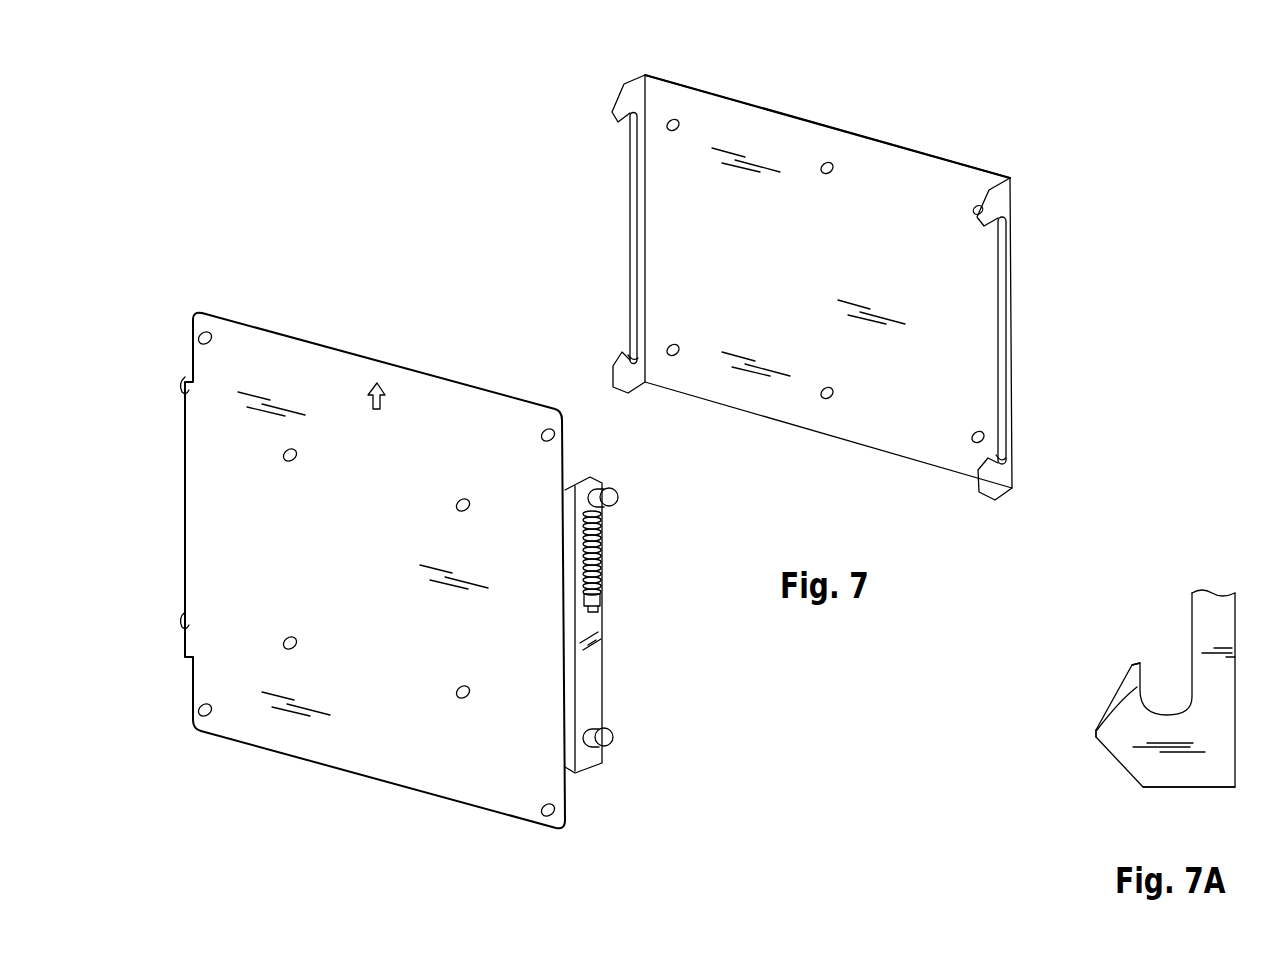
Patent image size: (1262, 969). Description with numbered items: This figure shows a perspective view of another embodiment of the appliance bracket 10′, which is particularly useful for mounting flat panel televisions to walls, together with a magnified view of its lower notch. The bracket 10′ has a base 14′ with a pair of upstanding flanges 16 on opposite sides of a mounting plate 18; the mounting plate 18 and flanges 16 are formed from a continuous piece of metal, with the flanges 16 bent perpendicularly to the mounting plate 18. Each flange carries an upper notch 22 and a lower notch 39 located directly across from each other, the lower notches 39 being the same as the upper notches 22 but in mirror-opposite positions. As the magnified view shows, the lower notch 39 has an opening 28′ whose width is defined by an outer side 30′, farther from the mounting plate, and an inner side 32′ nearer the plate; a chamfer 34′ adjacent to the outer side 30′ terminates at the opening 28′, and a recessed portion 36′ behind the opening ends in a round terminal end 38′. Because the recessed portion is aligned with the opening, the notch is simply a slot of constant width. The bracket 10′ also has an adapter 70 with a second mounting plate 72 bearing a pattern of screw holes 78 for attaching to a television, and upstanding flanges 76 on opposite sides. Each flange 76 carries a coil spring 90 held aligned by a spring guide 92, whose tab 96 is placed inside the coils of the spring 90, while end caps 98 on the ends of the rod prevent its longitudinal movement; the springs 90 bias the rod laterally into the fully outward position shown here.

In FIG. 7, the appliance bracket 10′ is at (353, 168).
In FIG. 7, the adapter 70 is at (215, 293).
In FIG. 7, the second mounting plate 72 is at (315, 372).
In FIG. 7, the screw holes 78 is at (298, 455).
In FIG. 7, the upstanding flanges 76 is at (590, 683).
In FIG. 7, the end caps 98 is at (612, 500).
In FIG. 7, the coil spring 90 is at (600, 557).
In FIG. 7, the spring guide 92 is at (600, 597).
In FIG. 7, the tab 96 is at (602, 602).
In FIG. 7, the base 14′ is at (1012, 315).
In FIG. 7, the upstanding flanges 16 is at (618, 121).
In FIG. 7, the mounting plate 18 is at (815, 264).
In FIG. 7, the upper notch 22 is at (630, 132).
In FIG. 7, the lower notch 39 is at (622, 352).
In FIG. 7A, the opening 28′ is at (1162, 670).
In FIG. 7A, the outer side 30′ is at (1133, 667).
In FIG. 7A, the inner side 32′ is at (1190, 618).
In FIG. 7A, the chamfer 34′ is at (1113, 687).
In FIG. 7A, the recessed portion 36′ is at (1095, 718).
In FIG. 7A, the terminal end 38′ is at (1167, 718).